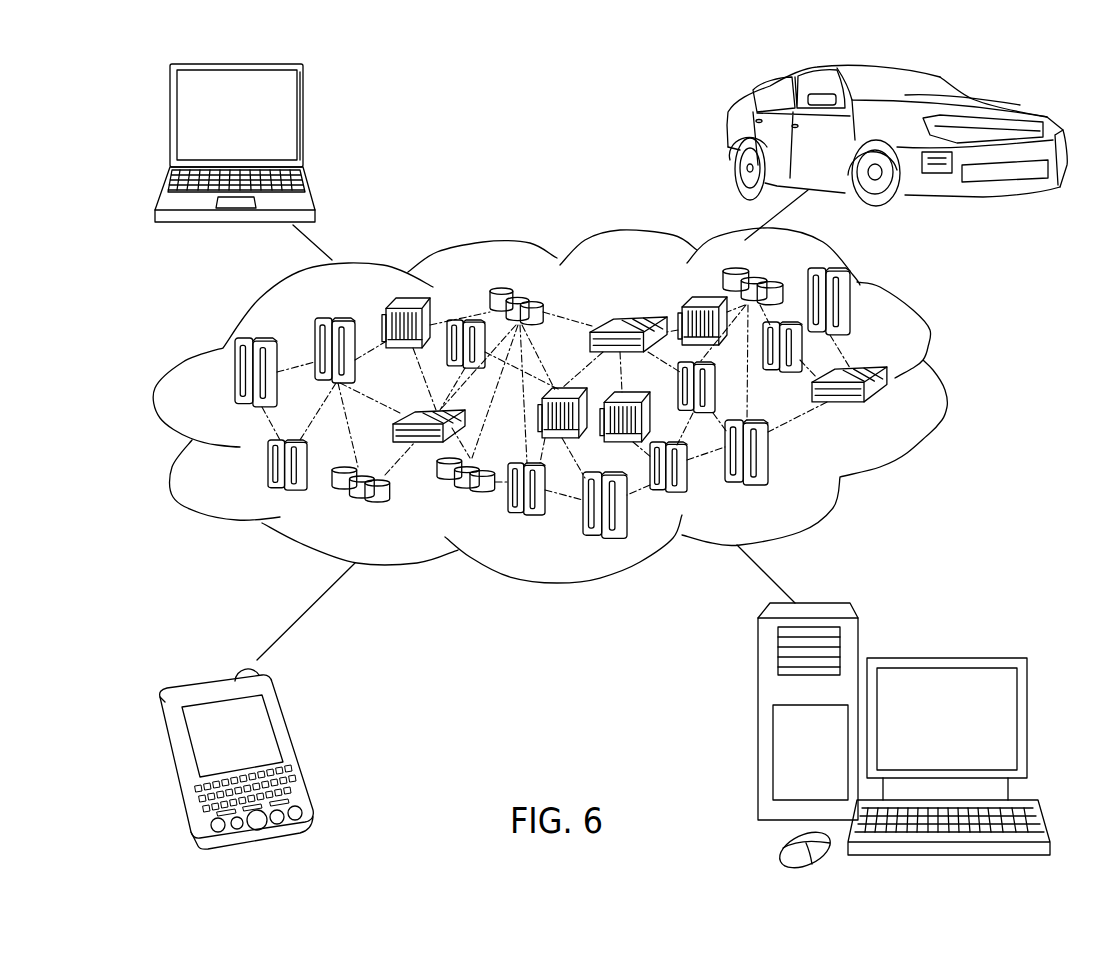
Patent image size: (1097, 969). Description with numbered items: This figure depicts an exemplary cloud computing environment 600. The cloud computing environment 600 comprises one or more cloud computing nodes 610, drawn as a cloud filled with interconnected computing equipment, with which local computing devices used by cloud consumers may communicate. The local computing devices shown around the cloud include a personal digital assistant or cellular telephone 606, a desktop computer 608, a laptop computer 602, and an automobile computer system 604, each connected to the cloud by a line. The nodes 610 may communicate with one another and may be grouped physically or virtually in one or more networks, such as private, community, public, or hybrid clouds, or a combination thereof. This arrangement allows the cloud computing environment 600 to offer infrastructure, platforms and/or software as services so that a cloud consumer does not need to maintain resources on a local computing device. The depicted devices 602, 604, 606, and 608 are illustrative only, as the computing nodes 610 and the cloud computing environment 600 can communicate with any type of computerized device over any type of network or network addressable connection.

The cloud computing environment 600 is at (1063, 309).
The laptop computer 602 is at (302, 122).
The automobile computer system 604 is at (727, 138).
The personal digital assistant (PDA) or cellular telephone 606 is at (293, 748).
The desktop computer 608 is at (943, 657).
The cloud computing nodes 610 is at (887, 412).